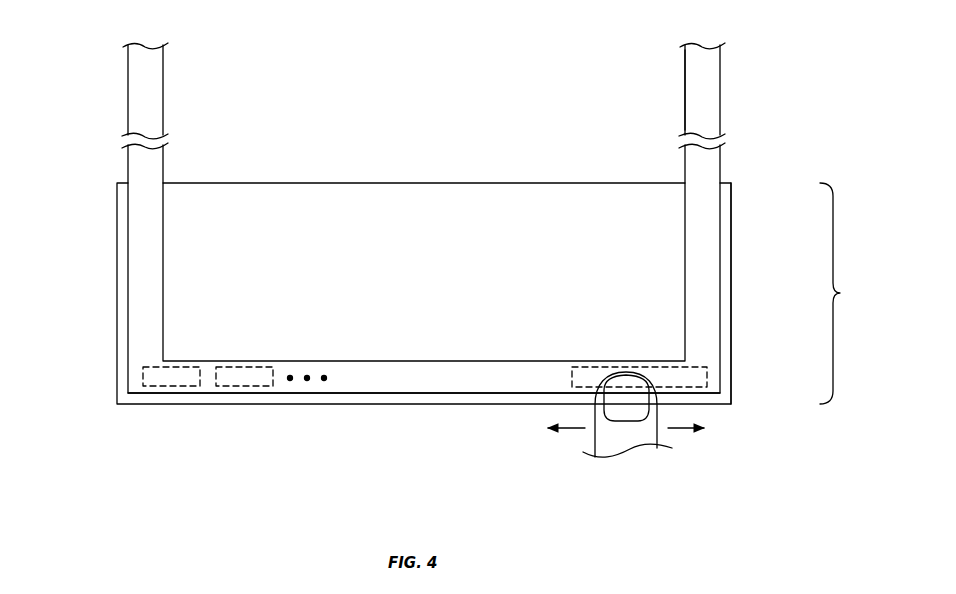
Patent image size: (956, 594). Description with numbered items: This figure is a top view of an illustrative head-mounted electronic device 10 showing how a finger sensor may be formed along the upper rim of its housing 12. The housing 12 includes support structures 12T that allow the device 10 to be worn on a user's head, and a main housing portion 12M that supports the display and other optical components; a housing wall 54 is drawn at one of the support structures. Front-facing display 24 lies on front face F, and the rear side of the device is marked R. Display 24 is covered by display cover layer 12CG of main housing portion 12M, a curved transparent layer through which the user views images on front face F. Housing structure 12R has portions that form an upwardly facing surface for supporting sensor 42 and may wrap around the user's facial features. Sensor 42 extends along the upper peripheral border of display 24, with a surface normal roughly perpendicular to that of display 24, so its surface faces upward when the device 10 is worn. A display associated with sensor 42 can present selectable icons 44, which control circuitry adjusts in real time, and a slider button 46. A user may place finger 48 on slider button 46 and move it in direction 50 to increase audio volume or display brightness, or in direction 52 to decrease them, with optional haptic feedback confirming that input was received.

The electronic device 10 is at (84, 273).
The housing 12 is at (720, 165).
The support structures 12T is at (138, 80).
The housing structure 12R is at (565, 198).
The display cover layer 12CG is at (731, 252).
The main housing portion 12M is at (849, 293).
The housing wall 54 is at (690, 80).
The selectable icons 44 is at (173, 387).
The sensor 42 is at (373, 383).
The slider button 46 is at (592, 367).
The finger 48 is at (626, 437).
The direction 50 is at (572, 428).
The direction 52 is at (686, 430).
The front-facing display 24 is at (468, 424).
The front face F is at (417, 439).
The rear R is at (303, 142).